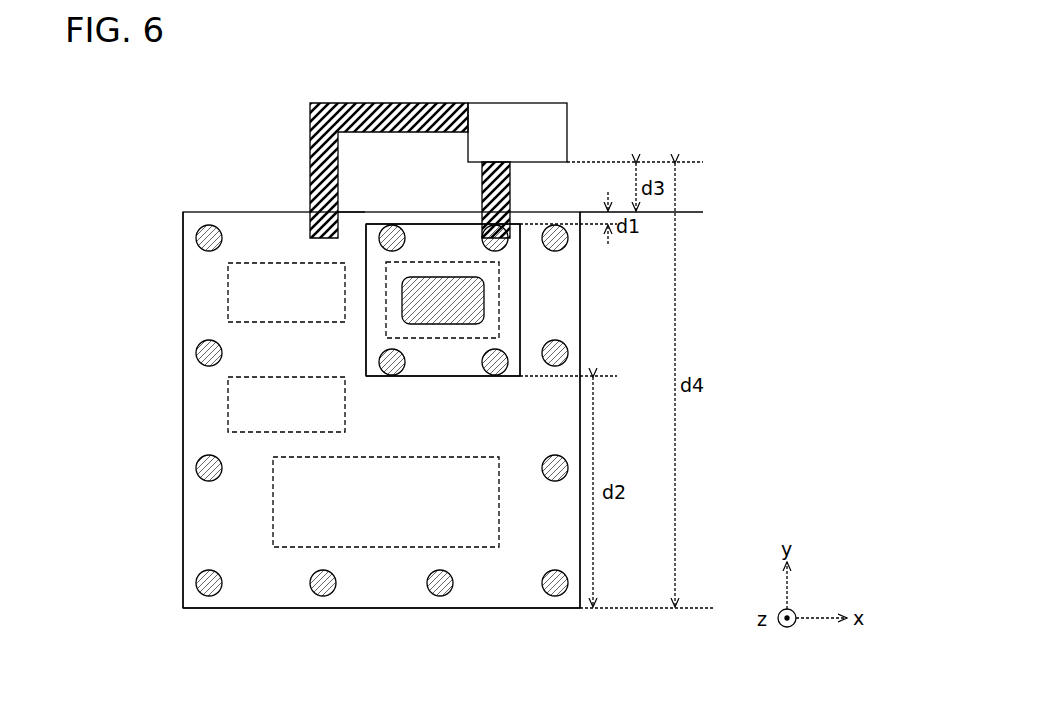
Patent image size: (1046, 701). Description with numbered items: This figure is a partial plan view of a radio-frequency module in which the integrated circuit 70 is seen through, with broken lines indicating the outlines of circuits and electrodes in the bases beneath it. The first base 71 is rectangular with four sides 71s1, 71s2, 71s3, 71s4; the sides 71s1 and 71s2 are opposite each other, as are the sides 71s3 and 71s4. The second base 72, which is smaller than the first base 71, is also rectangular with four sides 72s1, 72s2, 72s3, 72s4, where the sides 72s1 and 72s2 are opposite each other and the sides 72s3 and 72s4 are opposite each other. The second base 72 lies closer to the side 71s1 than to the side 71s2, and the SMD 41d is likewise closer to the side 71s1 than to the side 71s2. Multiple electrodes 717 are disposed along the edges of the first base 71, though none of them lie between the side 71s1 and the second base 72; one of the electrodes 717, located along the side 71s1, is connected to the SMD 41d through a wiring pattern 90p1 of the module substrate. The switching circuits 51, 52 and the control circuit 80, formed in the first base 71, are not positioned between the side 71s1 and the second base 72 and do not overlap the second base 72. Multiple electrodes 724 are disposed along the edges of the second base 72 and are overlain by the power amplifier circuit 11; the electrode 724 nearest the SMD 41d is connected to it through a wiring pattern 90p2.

The integrated circuit 70 is at (222, 186).
The first base 71 is at (240, 212).
The side 71s1 is at (350, 212).
The side 71s2 is at (408, 608).
The side 71s3 is at (580, 354).
The side 71s4 is at (183, 405).
The electrodes 717 is at (198, 236).
The switching circuit 51 is at (252, 263).
The switching circuit 52 is at (252, 377).
The control circuit 80 is at (412, 457).
The second base 72 is at (436, 224).
The side 72s1 is at (392, 224).
The side 72s2 is at (465, 376).
The side 72s3 is at (548, 302).
The side 72s4 is at (366, 300).
The electrodes 724 is at (484, 240).
The power amplifier circuit 11 is at (499, 286).
The wiring pattern 90p1 is at (310, 140).
The wiring pattern 90p2 is at (510, 198).
The SMD 41d is at (504, 103).